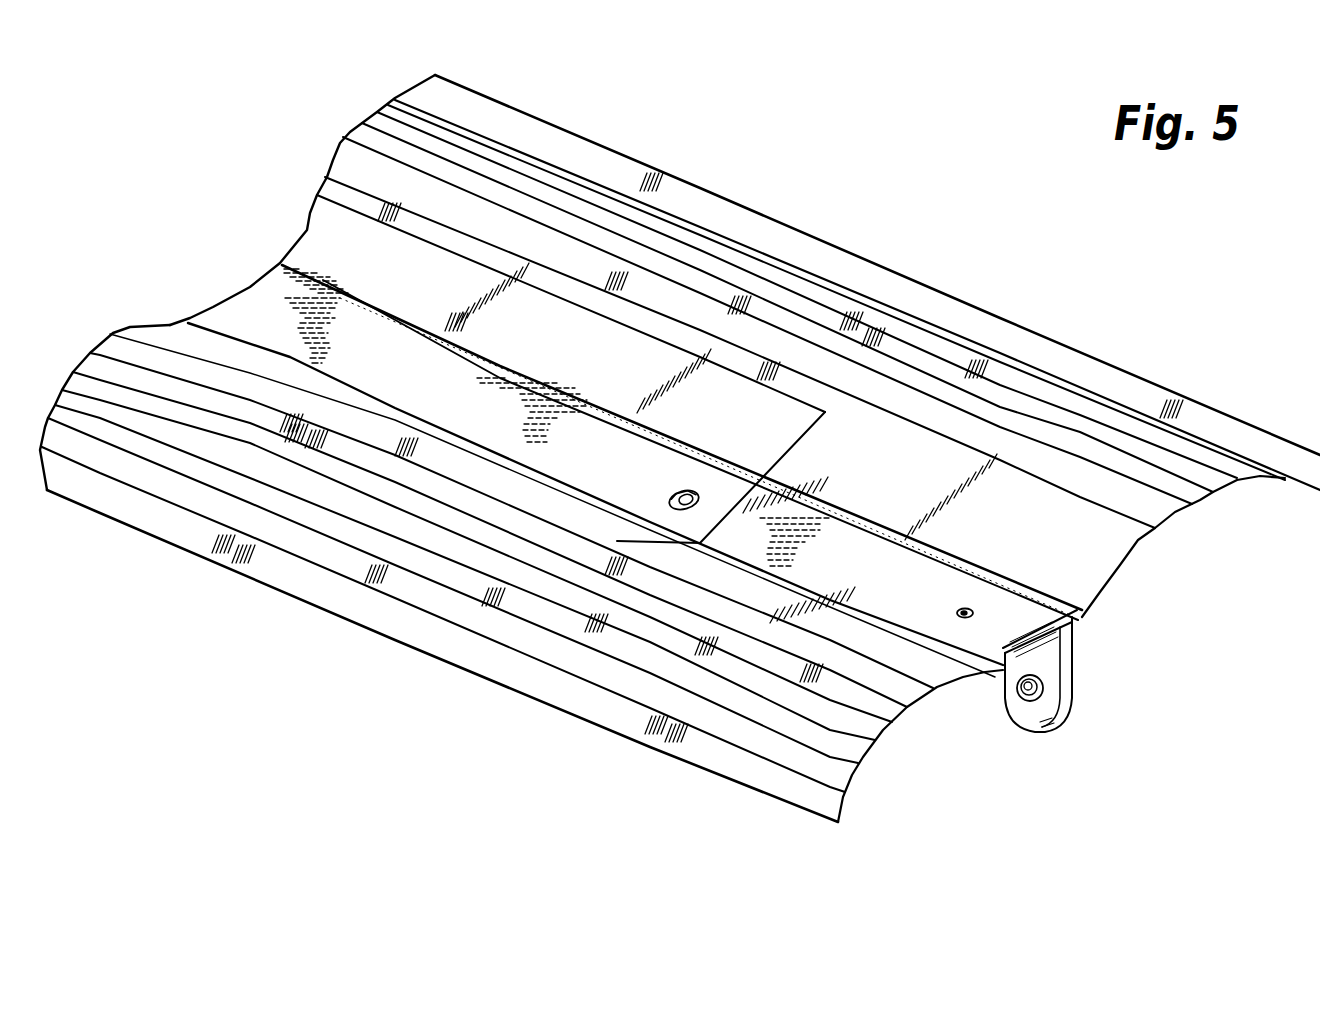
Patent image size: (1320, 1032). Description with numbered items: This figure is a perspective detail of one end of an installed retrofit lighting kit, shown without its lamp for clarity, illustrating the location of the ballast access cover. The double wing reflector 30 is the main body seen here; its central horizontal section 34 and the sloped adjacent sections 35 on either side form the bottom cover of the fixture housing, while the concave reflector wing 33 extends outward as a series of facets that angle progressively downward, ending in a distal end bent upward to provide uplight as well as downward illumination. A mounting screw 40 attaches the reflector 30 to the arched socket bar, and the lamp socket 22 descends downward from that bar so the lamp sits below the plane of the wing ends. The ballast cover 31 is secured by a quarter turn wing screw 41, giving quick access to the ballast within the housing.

The lamp socket 22 is at (1065, 671).
The double wing reflector 30 is at (392, 714).
The ballast cover 31 is at (267, 312).
The concave reflector wing 33 is at (1200, 490).
The central horizontal section 34 is at (850, 576).
The sloped adjacent sections 35 is at (1102, 570).
The mounting screw 40 is at (975, 612).
The quarter turn wing screw 41 is at (673, 494).